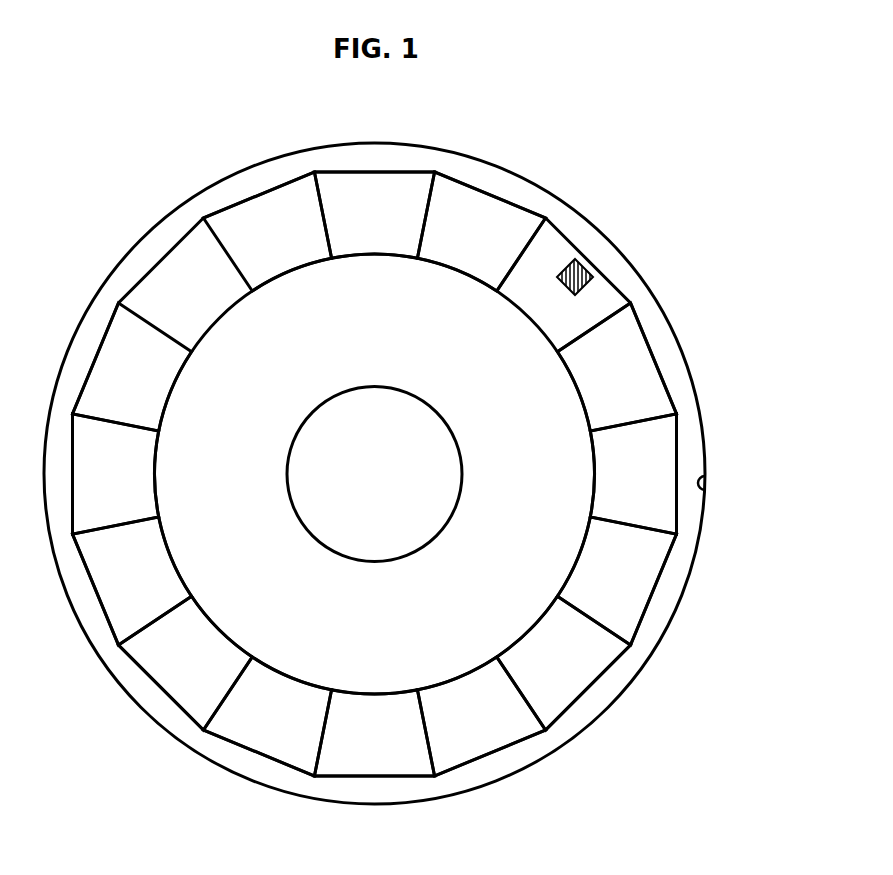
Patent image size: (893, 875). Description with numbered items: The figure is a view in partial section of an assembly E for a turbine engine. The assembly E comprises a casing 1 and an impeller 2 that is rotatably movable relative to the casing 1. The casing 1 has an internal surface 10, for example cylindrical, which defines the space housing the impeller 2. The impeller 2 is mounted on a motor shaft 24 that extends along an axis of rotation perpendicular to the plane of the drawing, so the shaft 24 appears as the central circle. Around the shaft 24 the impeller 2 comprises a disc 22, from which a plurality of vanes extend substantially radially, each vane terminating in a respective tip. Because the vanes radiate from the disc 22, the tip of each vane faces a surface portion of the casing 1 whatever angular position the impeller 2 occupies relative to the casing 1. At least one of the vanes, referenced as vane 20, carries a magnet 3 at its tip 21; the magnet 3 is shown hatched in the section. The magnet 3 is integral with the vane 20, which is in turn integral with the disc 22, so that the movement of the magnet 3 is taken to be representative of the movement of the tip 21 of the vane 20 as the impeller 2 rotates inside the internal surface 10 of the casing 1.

The casing 1 is at (143, 232).
The impeller 2 is at (97, 349).
The magnet 3 is at (581, 271).
The internal surface 10 is at (705, 490).
The vane 20 is at (588, 299).
The tip 21 is at (572, 238).
The disc 22 is at (502, 408).
The motor shaft 24 is at (423, 475).
The assembly for turbine engine E is at (374, 442).